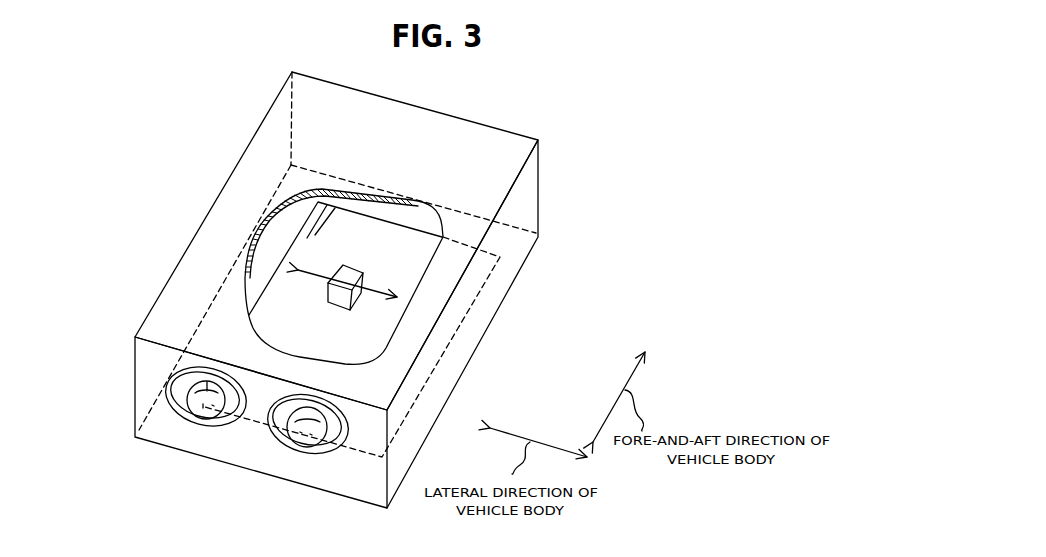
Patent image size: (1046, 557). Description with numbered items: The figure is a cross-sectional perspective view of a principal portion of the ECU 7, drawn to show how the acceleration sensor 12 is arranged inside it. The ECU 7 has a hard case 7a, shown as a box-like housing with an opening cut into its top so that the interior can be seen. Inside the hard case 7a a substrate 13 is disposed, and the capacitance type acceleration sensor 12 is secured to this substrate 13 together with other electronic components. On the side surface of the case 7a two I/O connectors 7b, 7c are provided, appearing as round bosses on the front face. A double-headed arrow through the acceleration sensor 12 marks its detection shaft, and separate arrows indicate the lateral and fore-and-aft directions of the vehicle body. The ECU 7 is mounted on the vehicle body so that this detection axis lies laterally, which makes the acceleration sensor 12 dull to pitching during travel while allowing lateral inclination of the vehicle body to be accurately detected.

The ECU 7 is at (212, 166).
The hard case 7a is at (448, 124).
The I/O connector 7b is at (202, 416).
The I/O connector 7c is at (305, 445).
The acceleration sensor 12 is at (362, 293).
The substrate 13 is at (306, 322).